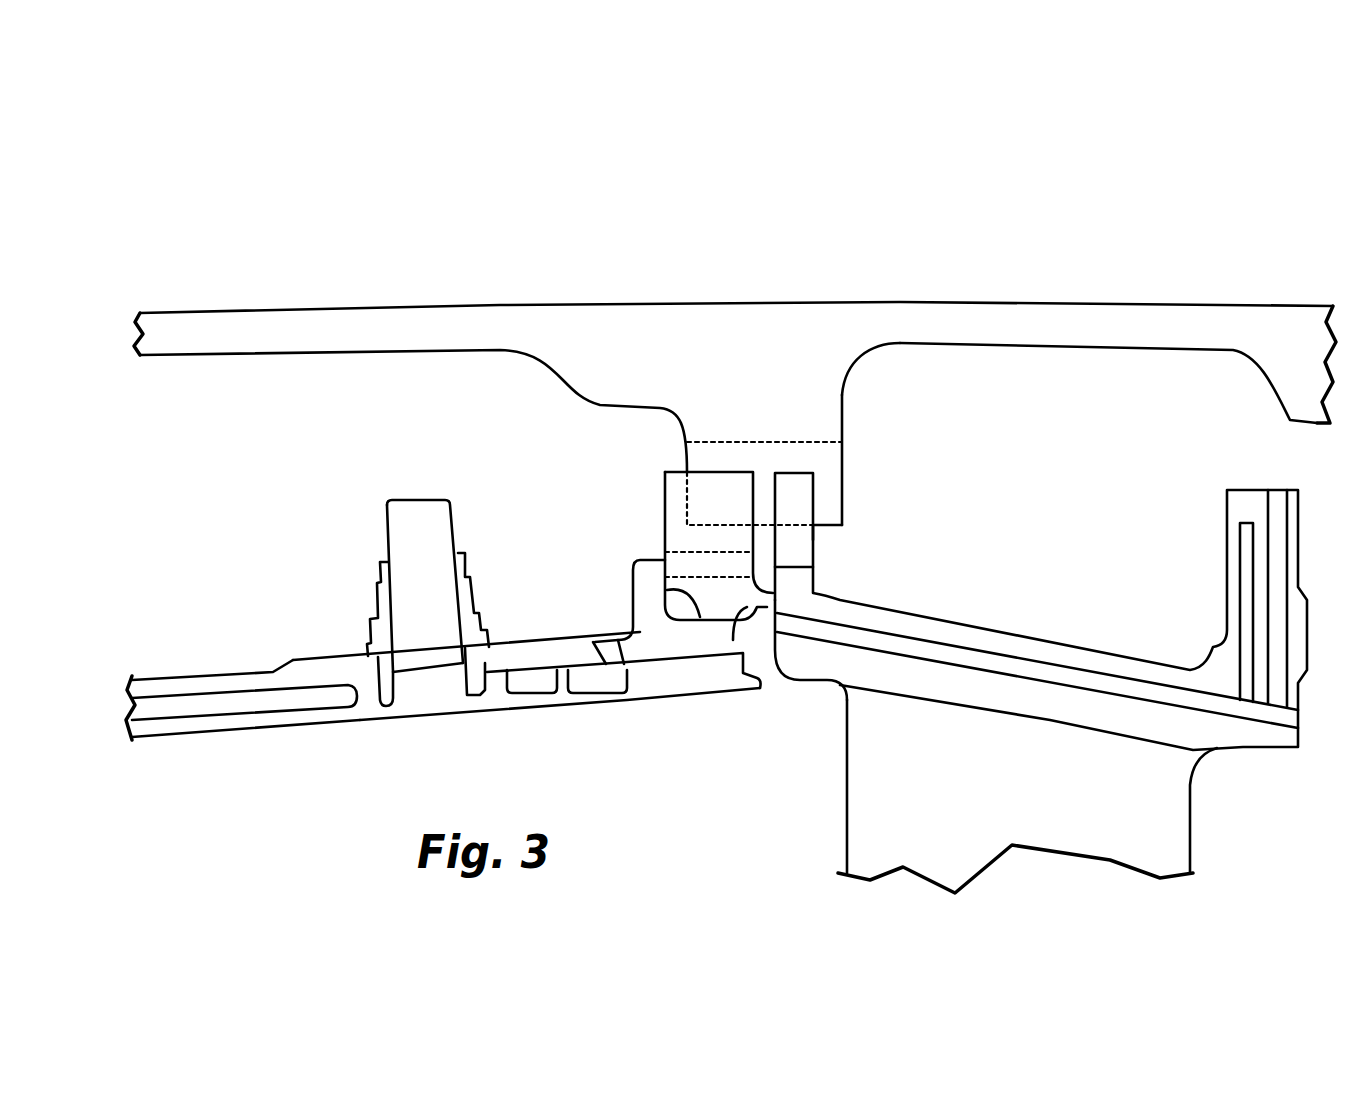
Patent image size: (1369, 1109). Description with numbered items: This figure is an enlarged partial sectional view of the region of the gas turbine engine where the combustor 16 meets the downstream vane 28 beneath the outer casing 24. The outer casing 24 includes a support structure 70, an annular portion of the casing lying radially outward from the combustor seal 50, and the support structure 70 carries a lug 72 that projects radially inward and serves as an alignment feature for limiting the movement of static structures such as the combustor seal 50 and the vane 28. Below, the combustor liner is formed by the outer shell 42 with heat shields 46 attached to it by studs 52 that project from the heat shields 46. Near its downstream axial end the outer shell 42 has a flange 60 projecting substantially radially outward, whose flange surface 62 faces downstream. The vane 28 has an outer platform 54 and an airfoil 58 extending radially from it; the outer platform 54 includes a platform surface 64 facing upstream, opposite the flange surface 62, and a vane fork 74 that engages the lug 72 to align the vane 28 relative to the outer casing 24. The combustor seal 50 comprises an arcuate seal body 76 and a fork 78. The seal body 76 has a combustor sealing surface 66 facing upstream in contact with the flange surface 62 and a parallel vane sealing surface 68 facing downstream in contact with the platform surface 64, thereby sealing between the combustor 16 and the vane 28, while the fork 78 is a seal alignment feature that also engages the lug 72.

The combustor 16 is at (177, 668).
The outer casing 24 is at (440, 300).
The vane 28 is at (996, 629).
The outer shell 42 is at (320, 653).
The heat shields 46 is at (430, 715).
The combustor seal 50 is at (661, 518).
The studs 52 is at (433, 496).
The outer platform 54 is at (817, 684).
The airfoil 58 is at (845, 806).
The flange 60 is at (634, 586).
The flange surface 62 is at (665, 560).
The platform surface 64 is at (777, 600).
The combustor sealing surface 66 is at (700, 617).
The vane sealing surface 68 is at (733, 640).
The support structure 70 is at (848, 411).
The lug 72 is at (845, 487).
The vane fork 74 is at (815, 540).
The seal body 76 is at (702, 576).
The fork 78 is at (684, 470).